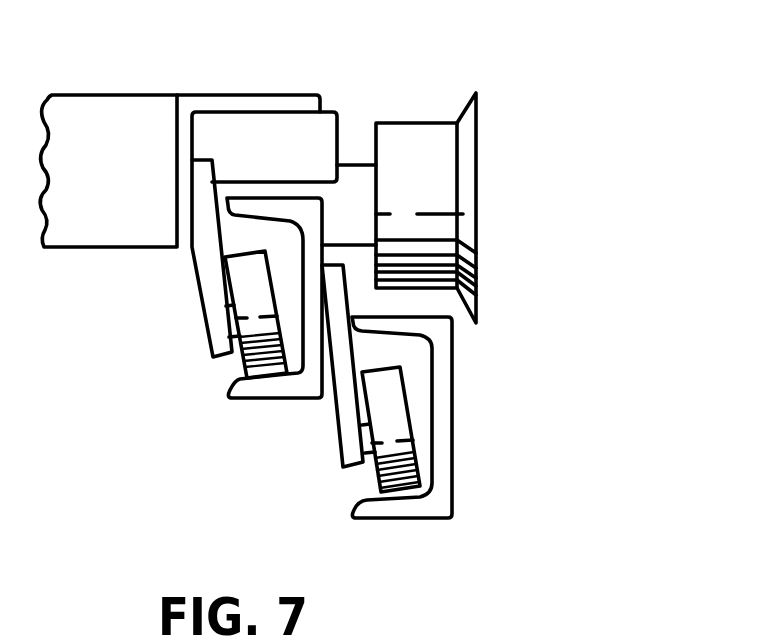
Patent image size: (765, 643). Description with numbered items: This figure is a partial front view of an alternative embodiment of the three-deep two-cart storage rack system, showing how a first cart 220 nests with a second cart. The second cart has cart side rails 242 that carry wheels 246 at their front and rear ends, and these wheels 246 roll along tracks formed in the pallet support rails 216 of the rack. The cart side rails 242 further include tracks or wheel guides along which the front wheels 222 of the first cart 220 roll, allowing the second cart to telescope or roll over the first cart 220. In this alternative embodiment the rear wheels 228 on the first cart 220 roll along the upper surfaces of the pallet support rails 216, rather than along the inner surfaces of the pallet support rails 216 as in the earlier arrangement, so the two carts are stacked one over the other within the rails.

The first cart 220 is at (122, 86).
The rear wheels 228 is at (443, 183).
The front wheels 222 is at (252, 345).
The cart side rails 242 is at (290, 387).
The wheels 246 is at (388, 448).
The pallet support rails 216 is at (435, 498).